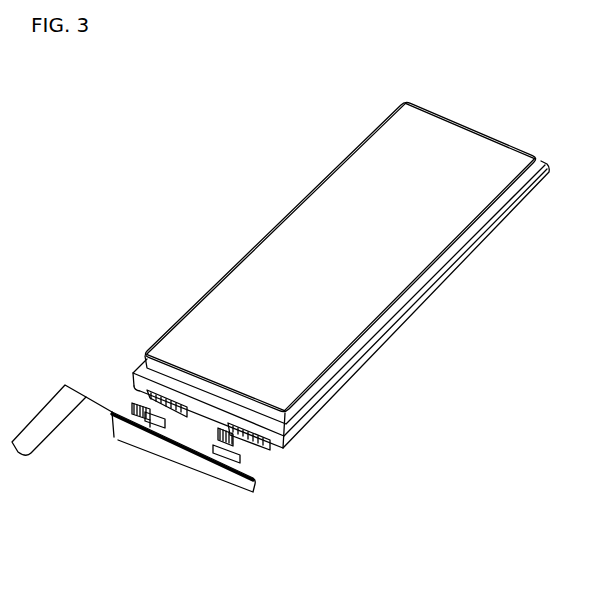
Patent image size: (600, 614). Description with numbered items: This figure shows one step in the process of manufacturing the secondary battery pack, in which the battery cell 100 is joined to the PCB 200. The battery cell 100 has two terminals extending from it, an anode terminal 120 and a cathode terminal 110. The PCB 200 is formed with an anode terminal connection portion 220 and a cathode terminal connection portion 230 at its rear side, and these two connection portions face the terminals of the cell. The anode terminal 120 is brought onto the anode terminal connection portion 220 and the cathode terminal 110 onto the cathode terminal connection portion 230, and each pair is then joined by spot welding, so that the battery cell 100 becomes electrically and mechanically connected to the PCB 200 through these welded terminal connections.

The battery cell 100 is at (465, 162).
The cathode terminal 110 is at (274, 456).
The anode terminal 120 is at (133, 394).
The PCB 200 is at (232, 497).
The anode terminal connection portion 220 is at (110, 433).
The cathode terminal connection portion 230 is at (222, 455).